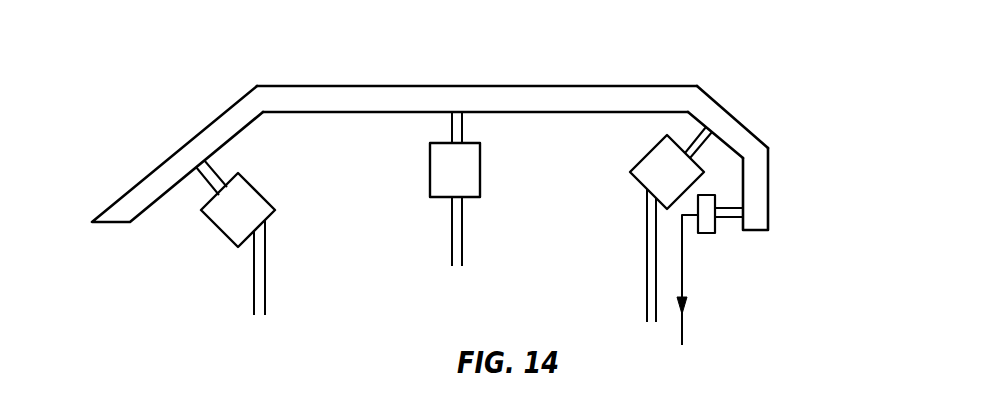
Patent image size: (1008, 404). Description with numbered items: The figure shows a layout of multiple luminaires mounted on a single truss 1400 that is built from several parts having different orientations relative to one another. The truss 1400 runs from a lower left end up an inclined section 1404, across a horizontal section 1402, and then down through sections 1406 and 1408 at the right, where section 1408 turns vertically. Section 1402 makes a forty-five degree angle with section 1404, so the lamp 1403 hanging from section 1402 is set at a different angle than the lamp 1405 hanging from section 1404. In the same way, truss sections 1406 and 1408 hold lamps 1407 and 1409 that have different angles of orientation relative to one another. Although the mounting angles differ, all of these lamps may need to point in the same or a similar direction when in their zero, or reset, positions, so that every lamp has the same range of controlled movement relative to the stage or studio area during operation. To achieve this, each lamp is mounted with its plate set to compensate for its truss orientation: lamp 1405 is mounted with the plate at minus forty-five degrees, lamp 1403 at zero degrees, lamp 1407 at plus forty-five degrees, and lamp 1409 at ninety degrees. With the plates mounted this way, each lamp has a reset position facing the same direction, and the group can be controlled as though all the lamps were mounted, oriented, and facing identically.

The truss 1400 is at (464, 130).
The truss section 1402 is at (322, 93).
The lamp 1403 is at (463, 178).
The truss section 1404 is at (170, 175).
The lamp 1405 is at (243, 212).
The truss section 1406 is at (725, 125).
The lamp 1407 is at (653, 167).
The truss section 1408 is at (760, 198).
The lamp 1409 is at (708, 225).